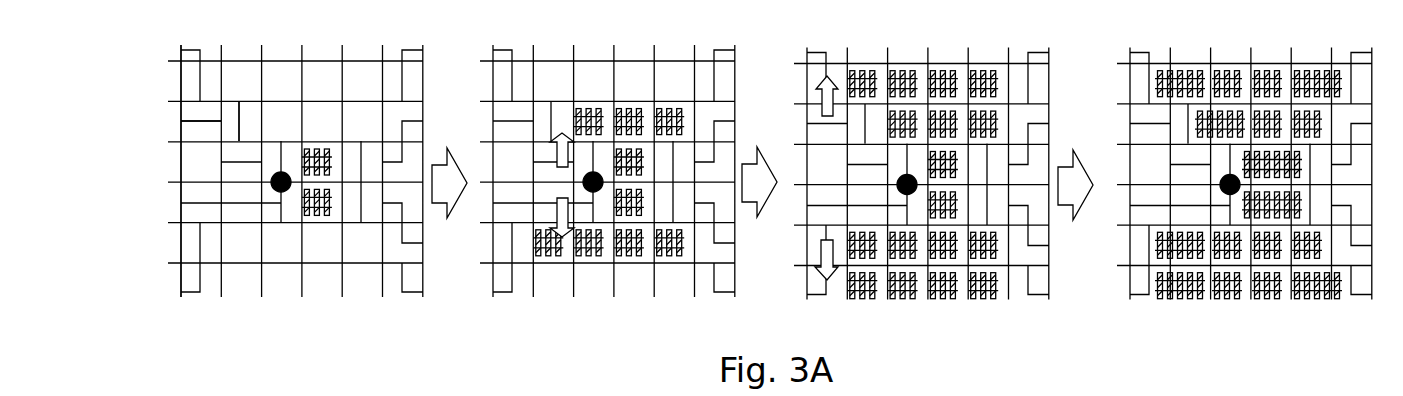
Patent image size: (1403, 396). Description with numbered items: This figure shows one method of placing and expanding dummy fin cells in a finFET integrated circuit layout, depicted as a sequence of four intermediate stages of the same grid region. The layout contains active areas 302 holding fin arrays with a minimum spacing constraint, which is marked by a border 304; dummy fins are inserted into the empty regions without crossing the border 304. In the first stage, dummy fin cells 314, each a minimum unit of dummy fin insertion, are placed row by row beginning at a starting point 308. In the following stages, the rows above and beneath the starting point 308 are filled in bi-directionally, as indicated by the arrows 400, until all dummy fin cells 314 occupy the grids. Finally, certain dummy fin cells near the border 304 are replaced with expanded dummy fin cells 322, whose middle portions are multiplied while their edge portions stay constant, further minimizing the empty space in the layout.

The active area 302 is at (193, 170).
The border 304 is at (228, 108).
The starting point 308 is at (270, 195).
The dummy fin cell 314 is at (316, 218).
The arrows 400 is at (813, 258).
The expanded dummy fin cell 322 is at (1278, 220).